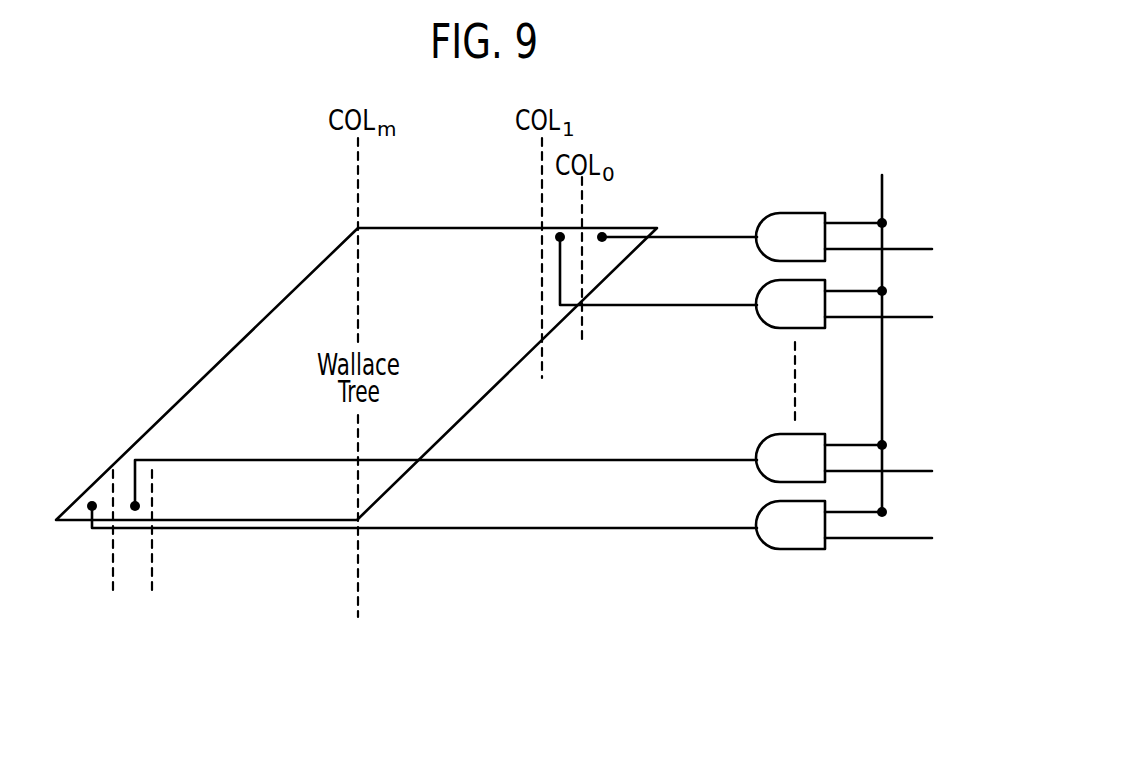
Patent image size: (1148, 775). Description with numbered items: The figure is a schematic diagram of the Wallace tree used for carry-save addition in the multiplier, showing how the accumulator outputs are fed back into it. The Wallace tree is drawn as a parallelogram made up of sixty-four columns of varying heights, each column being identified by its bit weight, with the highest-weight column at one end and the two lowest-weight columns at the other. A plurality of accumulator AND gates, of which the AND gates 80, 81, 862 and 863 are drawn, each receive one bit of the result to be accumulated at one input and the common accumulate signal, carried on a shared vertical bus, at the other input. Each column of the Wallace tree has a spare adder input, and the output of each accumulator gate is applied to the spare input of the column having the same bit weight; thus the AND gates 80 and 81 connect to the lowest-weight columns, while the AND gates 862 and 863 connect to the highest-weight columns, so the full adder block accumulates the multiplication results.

The AND gate 80 is at (770, 245).
The AND gate 81 is at (770, 313).
The AND gate 862 is at (771, 462).
The AND gate 863 is at (771, 528).